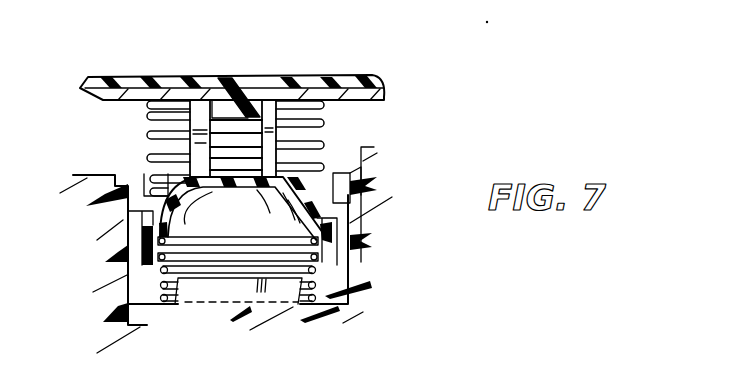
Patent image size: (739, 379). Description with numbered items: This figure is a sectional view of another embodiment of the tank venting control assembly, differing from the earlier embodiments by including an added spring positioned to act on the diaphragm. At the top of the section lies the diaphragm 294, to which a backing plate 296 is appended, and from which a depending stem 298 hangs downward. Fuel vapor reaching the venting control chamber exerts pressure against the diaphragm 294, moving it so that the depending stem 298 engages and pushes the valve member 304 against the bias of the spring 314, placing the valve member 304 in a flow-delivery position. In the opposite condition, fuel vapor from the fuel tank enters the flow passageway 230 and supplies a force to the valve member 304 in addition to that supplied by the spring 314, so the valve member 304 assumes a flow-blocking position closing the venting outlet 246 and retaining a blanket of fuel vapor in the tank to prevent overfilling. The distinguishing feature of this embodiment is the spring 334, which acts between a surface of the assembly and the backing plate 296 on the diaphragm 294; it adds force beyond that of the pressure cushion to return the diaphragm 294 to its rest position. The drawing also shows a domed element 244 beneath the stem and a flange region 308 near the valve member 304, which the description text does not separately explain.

The diaphragm 294 is at (110, 79).
The backing plate 296 is at (126, 101).
The depending stem 298 is at (271, 108).
The spring 334 is at (338, 122).
The venting outlet 246 is at (175, 173).
The dome 244 is at (185, 224).
The valve member 304 is at (350, 196).
The flange 308 is at (350, 253).
The spring 314 is at (150, 268).
The flow passageway 230 is at (147, 325).